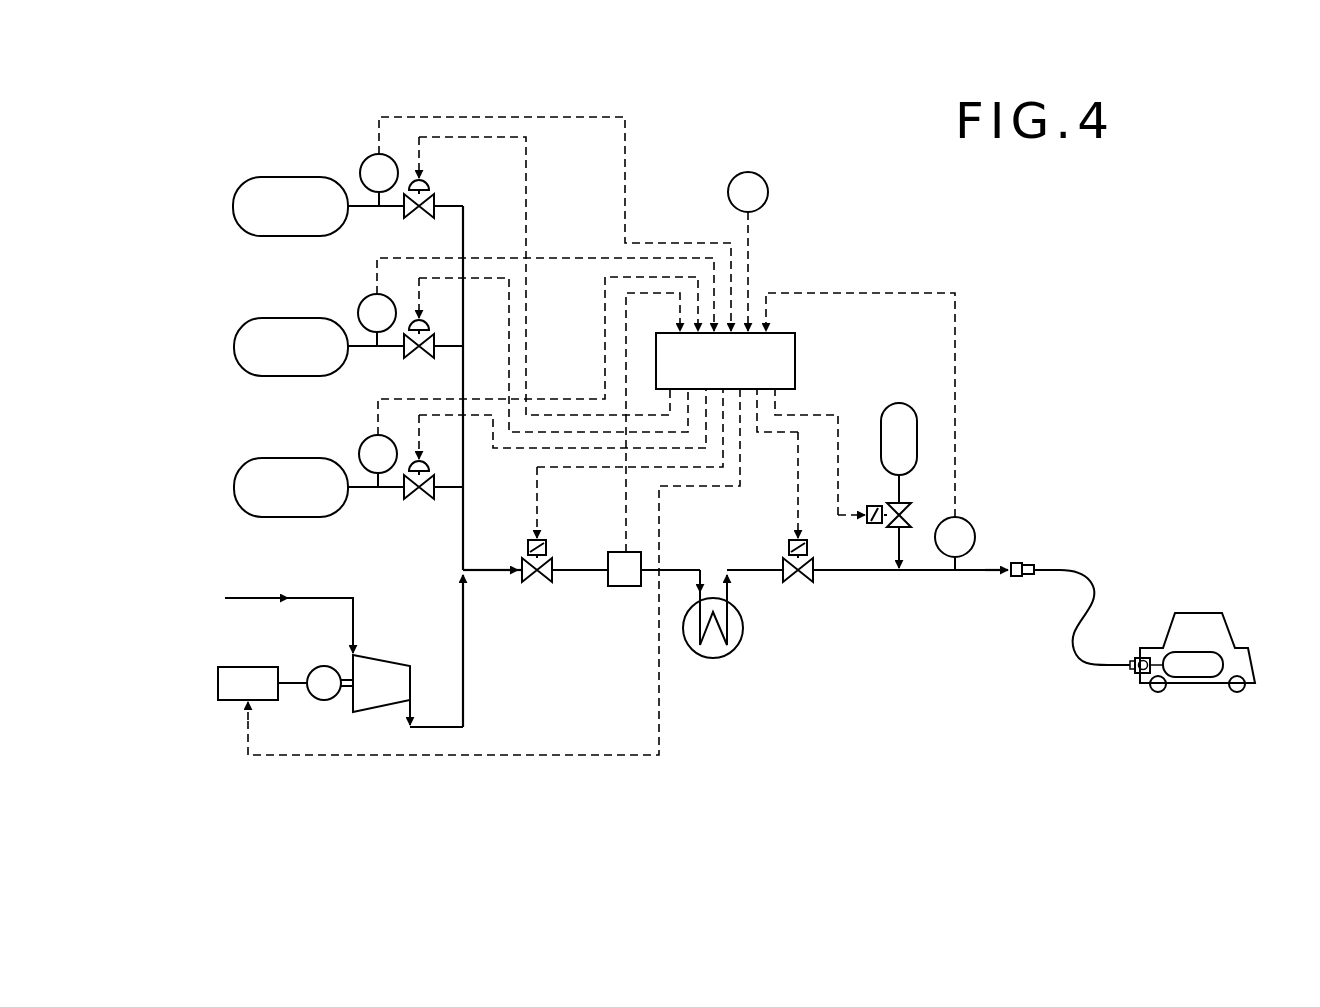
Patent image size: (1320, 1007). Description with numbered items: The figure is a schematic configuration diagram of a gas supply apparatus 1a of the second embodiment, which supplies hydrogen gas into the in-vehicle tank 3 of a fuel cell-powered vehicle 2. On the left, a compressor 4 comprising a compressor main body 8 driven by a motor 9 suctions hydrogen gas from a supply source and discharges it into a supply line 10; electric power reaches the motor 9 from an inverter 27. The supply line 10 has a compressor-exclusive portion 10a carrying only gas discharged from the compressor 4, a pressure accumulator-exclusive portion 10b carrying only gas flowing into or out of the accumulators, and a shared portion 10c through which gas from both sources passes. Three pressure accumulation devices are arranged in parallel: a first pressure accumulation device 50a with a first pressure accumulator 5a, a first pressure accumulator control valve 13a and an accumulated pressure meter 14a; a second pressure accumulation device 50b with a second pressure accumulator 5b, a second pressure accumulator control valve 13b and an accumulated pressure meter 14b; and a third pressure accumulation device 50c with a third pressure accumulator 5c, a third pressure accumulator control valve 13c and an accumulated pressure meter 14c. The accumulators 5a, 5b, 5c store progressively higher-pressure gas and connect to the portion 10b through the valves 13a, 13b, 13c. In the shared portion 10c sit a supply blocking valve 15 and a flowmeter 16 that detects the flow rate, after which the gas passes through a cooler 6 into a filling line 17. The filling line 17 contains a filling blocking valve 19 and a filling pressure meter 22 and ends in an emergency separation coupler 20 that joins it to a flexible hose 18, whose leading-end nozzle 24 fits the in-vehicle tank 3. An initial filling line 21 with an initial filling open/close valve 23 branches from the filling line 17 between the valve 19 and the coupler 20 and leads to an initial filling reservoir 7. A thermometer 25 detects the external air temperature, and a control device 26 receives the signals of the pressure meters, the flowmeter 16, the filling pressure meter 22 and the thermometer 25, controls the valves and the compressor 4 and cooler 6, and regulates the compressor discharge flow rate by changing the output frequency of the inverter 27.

The gas supply apparatus 1a is at (1063, 297).
The fuel cell-powered vehicle 2 is at (1196, 611).
The in-vehicle tank 3 is at (1190, 677).
The compressor 4 is at (333, 660).
The first pressure accumulator 5a is at (277, 177).
The second pressure accumulator 5b is at (278, 318).
The third pressure accumulator 5c is at (277, 458).
The cooler 6 is at (713, 658).
The initial filling reservoir 7 is at (899, 403).
The compressor main body 8 is at (404, 683).
The motor 9 is at (324, 700).
The supply line 10 is at (475, 690).
The compressor-exclusive portion 10a is at (465, 660).
The pressure accumulator-exclusive portion 10b is at (465, 497).
The shared portion 10c is at (491, 573).
The first pressure accumulator control valve 13a is at (416, 213).
The second pressure accumulator control valve 13b is at (416, 353).
The third pressure accumulator control valve 13c is at (416, 495).
The accumulated pressure meter 14a is at (362, 161).
The accumulated pressure meter 14b is at (360, 302).
The accumulated pressure meter 14c is at (361, 443).
The supply blocking valve 15 is at (546, 548).
The flowmeter 16 is at (624, 586).
The filling line 17 is at (857, 572).
The flexible hose 18 is at (1072, 636).
The filling blocking valve 19 is at (790, 542).
The emergency separation coupler 20 is at (1017, 564).
The initial filling line 21 is at (897, 545).
The filling pressure meter 22 is at (966, 522).
The initial filling open/close valve 23 is at (872, 506).
The nozzle 24 is at (1132, 672).
The thermometer 25 is at (769, 192).
The control device 26 is at (795, 358).
The inverter 27 is at (218, 684).
The first pressure accumulation device 50a is at (232, 182).
The second pressure accumulation device 50b is at (232, 322).
The third pressure accumulation device 50c is at (232, 462).